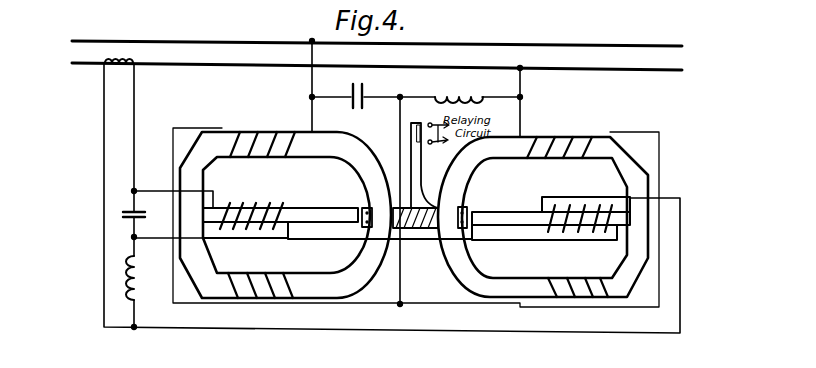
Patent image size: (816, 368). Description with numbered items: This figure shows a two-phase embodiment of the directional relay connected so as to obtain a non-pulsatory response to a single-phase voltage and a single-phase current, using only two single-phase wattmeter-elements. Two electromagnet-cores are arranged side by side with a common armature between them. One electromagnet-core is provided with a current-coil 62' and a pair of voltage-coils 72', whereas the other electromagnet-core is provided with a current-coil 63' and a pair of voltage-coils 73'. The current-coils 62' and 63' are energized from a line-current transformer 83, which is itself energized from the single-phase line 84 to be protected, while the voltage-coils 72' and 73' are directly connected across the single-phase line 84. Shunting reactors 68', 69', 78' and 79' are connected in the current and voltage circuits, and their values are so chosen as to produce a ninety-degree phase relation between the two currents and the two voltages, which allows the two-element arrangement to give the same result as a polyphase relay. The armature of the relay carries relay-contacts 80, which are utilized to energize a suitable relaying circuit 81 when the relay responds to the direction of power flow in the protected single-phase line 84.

The single-phase line 84 is at (230, 44).
The line-current transformer 83 is at (121, 70).
The shunting reactor 69' is at (97, 211).
The shunting reactor 68' is at (93, 278).
The shunting reactor 79' is at (371, 89).
The shunting reactor 78' is at (457, 87).
The current-coil 63' is at (280, 209).
The voltage-coils 73' is at (278, 215).
The relaying circuit 81 is at (442, 141).
The relay-contacts 80 is at (430, 144).
The current-coil 62' is at (551, 208).
The voltage-coils 72' is at (560, 217).